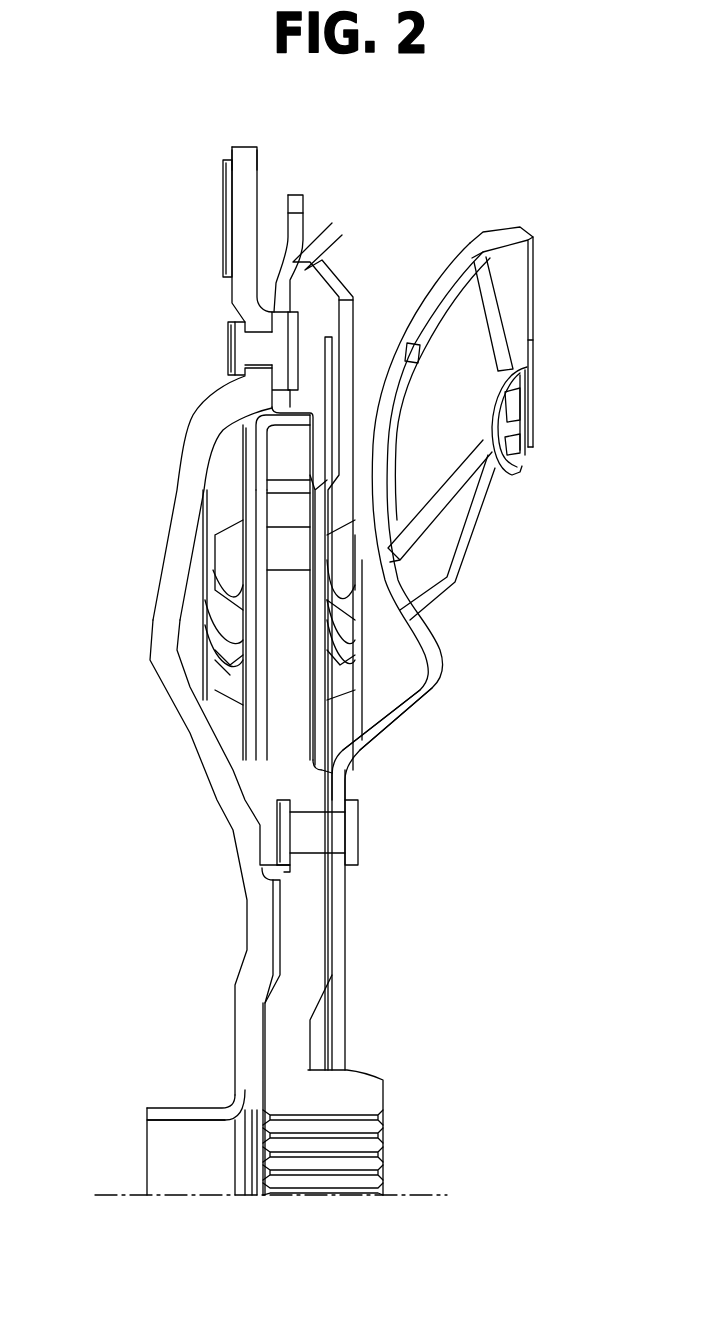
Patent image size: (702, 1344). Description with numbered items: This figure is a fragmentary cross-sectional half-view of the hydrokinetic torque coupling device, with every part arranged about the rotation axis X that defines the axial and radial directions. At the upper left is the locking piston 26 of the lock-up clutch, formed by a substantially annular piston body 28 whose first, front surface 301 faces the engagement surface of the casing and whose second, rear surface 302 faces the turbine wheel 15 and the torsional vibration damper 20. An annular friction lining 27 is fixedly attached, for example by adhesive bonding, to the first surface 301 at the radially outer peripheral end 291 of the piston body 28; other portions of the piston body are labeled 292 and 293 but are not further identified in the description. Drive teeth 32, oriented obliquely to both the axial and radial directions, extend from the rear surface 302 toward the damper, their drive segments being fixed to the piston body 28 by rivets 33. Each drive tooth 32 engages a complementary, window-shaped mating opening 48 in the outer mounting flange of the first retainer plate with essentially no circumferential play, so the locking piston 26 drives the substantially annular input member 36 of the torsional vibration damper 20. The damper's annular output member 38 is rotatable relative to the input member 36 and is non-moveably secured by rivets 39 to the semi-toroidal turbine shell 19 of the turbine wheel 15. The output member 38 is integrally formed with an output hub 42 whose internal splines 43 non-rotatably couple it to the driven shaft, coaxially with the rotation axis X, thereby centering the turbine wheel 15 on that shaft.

The radially outer peripheral end 291 is at (247, 146).
The first surface 301 is at (231, 153).
The second surface 302 is at (258, 160).
The annular friction lining 27 is at (222, 222).
The drive teeth 32 is at (331, 232).
The mating openings 48 is at (330, 273).
The torsional vibration damper 20 is at (360, 331).
The turbine wheel 15 is at (543, 288).
The rivets 33 is at (230, 346).
The input member 36 is at (218, 480).
The locking piston 26 is at (142, 570).
The piston body 28 is at (165, 653).
The turbine shell 19 is at (383, 728).
The rivets 39 is at (313, 832).
The output member 38 is at (313, 932).
The output hub 42 is at (357, 1092).
The second arm of support rod 292 is at (250, 1087).
The base of support rod 293 is at (183, 1117).
The internal splines 43 is at (358, 1140).
The rotation axis X is at (103, 1200).